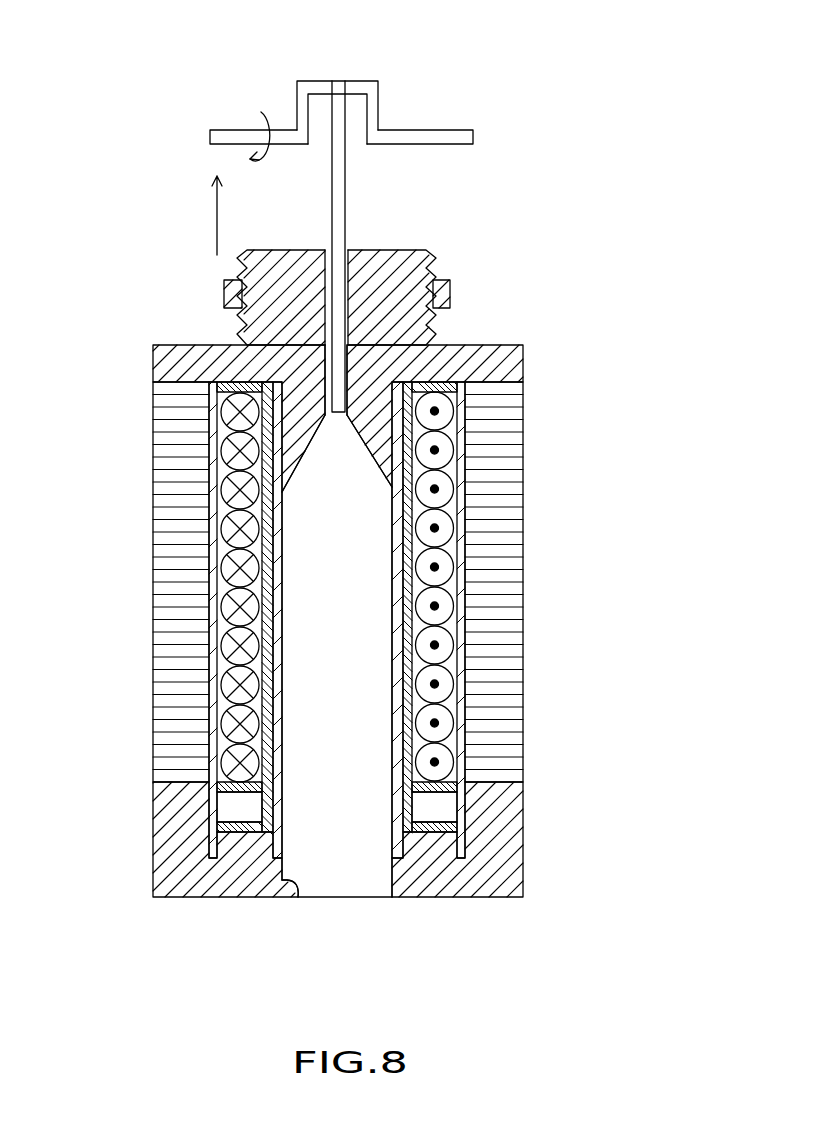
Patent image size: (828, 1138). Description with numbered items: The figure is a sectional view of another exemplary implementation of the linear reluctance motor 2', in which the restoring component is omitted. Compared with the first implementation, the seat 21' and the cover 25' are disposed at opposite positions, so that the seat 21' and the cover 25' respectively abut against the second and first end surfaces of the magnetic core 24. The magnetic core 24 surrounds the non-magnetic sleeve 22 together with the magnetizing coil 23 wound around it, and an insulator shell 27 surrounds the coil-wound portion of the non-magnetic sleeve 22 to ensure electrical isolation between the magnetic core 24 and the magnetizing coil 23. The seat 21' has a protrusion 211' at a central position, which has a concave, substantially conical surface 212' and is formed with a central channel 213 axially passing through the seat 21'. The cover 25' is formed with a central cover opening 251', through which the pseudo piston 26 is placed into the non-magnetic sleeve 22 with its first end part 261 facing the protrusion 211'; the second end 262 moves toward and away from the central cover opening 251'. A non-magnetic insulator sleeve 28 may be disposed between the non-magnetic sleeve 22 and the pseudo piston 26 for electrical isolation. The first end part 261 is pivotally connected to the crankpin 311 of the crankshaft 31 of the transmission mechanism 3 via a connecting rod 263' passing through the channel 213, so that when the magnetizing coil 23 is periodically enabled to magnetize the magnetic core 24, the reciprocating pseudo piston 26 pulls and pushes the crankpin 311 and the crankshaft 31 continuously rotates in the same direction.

The linear reluctance motor 2' is at (358, 583).
The transmission mechanism 3 is at (378, 127).
The crankshaft 31 is at (235, 129).
The crankpin 311 is at (357, 81).
The connecting rod 263' is at (396, 246).
The seat 21' is at (389, 273).
The central channel 213 is at (372, 252).
The protrusion 211' is at (393, 418).
The concave, substantially conical surface 212' is at (458, 453).
The first end part 261 is at (348, 492).
The insulator shell 27 is at (463, 538).
The magnetic core 24 is at (493, 596).
The magnetizing coil 23 is at (230, 566).
The non-magnetic insulator sleeve 28 is at (270, 620).
The non-magnetic sleeve 22 is at (407, 672).
The pseudo piston 26 is at (367, 725).
The cover 25' is at (384, 839).
The central cover opening 251' is at (291, 922).
The second end 262 is at (357, 883).